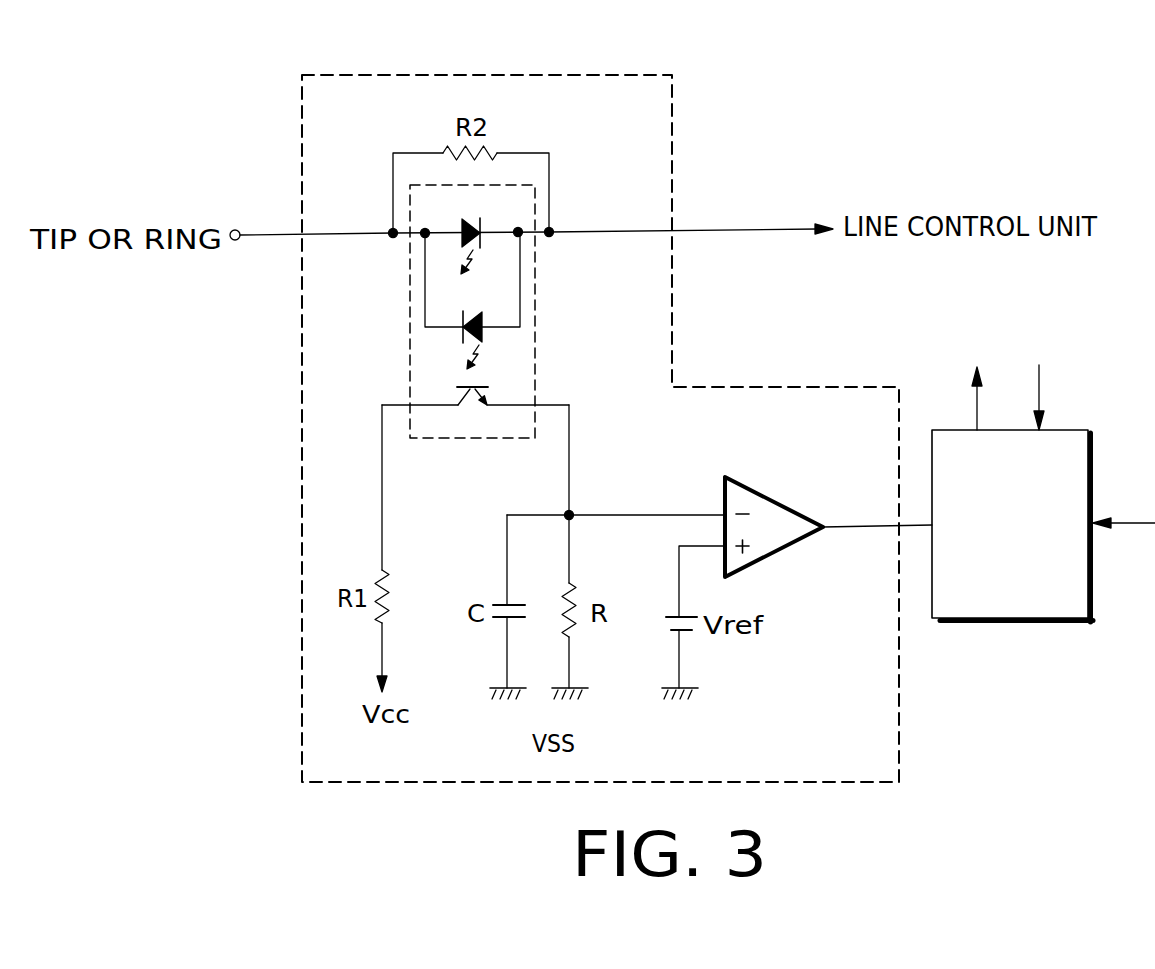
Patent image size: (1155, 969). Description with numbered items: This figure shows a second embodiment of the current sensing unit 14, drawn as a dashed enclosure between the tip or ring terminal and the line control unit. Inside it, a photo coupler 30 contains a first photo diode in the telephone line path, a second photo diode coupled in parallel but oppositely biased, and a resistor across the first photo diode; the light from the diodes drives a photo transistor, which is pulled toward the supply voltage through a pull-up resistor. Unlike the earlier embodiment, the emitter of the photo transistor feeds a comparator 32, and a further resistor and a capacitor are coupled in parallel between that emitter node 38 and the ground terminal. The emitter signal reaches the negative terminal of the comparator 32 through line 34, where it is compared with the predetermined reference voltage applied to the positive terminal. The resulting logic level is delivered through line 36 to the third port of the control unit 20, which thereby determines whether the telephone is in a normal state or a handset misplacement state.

The current sensing unit 14 is at (740, 104).
The photo coupler 30 is at (410, 357).
The phototransistor output node 38 is at (569, 452).
The comparator 32 is at (775, 498).
The line 34 is at (645, 516).
The line 36 is at (868, 528).
The control unit 20 is at (1013, 625).